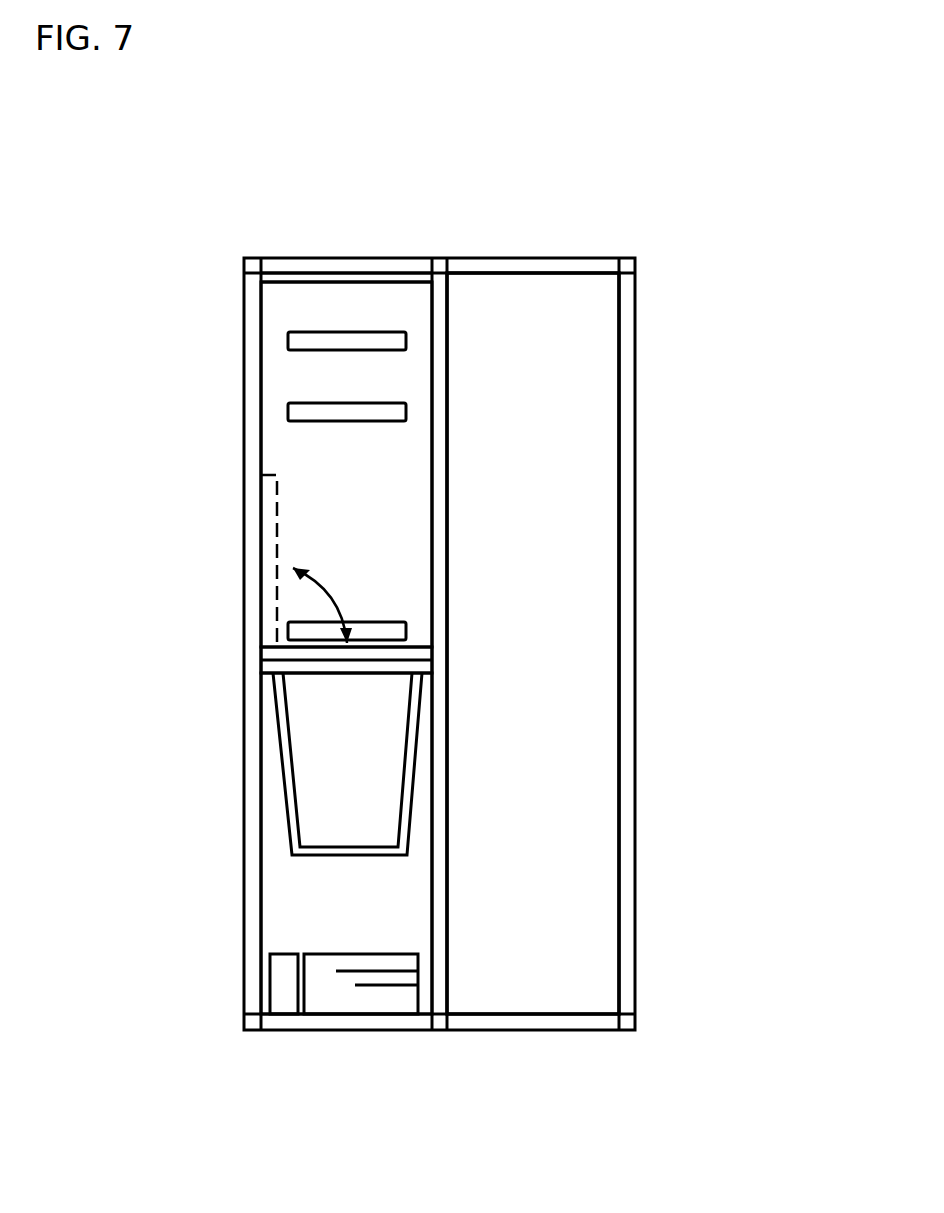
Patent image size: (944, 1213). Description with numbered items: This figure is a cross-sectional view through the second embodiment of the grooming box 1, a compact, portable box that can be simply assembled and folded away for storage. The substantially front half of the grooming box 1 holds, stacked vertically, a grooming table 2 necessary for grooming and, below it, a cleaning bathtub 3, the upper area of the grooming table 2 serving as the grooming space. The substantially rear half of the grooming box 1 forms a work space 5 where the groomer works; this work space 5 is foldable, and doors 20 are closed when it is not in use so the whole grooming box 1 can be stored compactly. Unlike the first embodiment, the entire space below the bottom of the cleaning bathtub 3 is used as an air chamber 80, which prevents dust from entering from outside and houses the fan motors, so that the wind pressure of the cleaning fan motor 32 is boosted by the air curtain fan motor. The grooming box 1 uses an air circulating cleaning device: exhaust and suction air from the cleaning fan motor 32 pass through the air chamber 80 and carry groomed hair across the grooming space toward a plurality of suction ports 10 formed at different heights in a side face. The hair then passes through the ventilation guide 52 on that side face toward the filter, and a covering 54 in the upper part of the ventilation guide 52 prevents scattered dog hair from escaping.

The grooming box 1 is at (500, 253).
The doors 20 is at (590, 252).
The work space 5 is at (583, 970).
The covering 54 is at (317, 277).
The ventilation guide 52 is at (343, 297).
The suction ports 10 is at (317, 332).
The grooming table 2 is at (303, 655).
The cleaning bathtub 3 is at (285, 767).
The air chamber 80 is at (285, 885).
The cleaning fan motor 32 is at (347, 993).